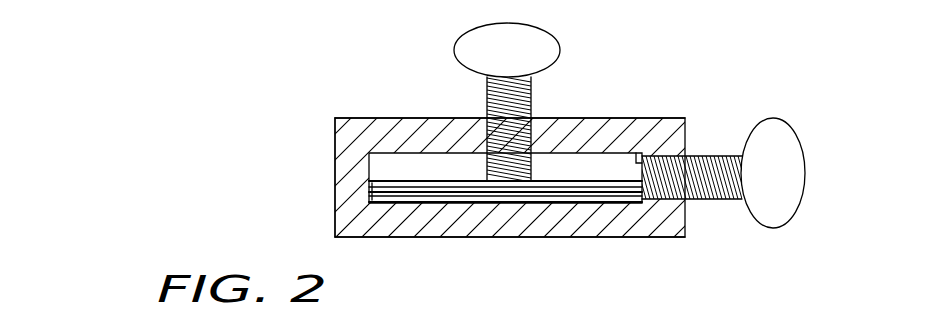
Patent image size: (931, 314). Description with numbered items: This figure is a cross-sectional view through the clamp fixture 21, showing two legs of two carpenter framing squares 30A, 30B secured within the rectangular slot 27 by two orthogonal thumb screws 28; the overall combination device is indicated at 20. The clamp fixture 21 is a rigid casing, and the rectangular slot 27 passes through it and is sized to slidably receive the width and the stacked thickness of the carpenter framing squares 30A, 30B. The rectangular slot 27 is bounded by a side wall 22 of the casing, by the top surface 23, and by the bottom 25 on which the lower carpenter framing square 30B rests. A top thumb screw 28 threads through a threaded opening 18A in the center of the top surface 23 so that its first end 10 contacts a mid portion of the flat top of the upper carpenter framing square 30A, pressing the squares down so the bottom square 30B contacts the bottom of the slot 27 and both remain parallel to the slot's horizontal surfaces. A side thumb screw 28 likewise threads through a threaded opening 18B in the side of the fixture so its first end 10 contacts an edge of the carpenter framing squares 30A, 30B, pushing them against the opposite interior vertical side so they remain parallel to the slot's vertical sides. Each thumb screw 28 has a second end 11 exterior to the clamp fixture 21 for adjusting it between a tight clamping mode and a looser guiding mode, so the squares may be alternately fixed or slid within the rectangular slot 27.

The assembly 20 is at (237, 74).
The clamp fixture 21 is at (332, 120).
The side wall 22 is at (335, 160).
The top surface 23 is at (352, 118).
The bottom surface 25 is at (645, 237).
The rectangular slot 27 is at (585, 168).
The first end 10 is at (638, 158).
The carpenter framing square 30A is at (614, 183).
The carpenter framing square 30B is at (522, 200).
The threaded opening 18A is at (485, 116).
The threaded opening 18B is at (690, 200).
The thumb screw 28 is at (457, 60).
The second end 11 is at (542, 30).